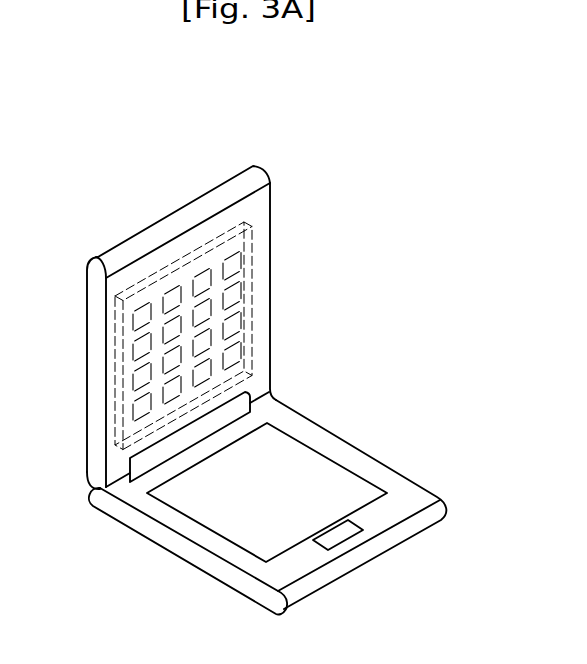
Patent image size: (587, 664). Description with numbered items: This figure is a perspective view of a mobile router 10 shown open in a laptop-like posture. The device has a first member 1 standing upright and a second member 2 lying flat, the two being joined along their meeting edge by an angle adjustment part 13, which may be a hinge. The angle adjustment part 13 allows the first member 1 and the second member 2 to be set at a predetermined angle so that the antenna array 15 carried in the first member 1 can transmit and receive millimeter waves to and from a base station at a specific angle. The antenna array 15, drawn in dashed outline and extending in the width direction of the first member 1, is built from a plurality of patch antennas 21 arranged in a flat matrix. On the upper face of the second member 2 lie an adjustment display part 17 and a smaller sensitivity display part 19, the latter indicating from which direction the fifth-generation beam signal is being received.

The mobile router 10 is at (228, 68).
The first member 1 is at (253, 183).
The second member 2 is at (188, 555).
The angle adjustment part 13 is at (130, 472).
The antenna array 15 is at (243, 275).
The adjustment display part 17 is at (323, 468).
The sensitivity display part 19 is at (344, 533).
The patch antennas 21 is at (133, 352).